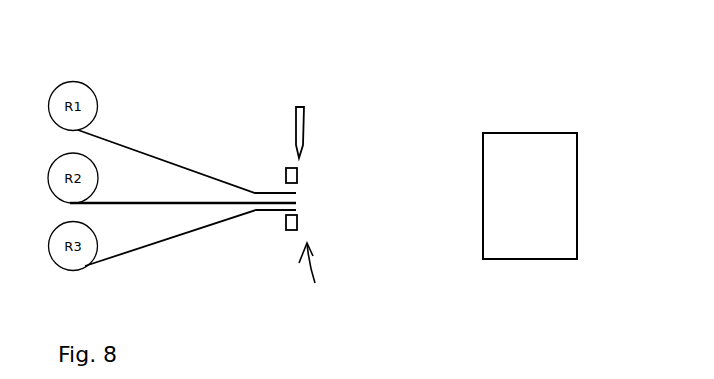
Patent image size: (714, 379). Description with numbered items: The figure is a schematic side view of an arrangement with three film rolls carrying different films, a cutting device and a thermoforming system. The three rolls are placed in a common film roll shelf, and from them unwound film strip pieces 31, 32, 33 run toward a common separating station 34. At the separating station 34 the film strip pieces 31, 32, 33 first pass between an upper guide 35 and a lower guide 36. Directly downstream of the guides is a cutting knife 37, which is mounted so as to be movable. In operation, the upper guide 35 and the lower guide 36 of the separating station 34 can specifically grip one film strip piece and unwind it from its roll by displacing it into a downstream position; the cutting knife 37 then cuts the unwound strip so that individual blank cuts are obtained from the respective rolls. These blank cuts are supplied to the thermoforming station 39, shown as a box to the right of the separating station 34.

The unwound film strip piece 31 is at (165, 160).
The unwound film strip piece 32 is at (180, 203).
The unwound film strip piece 33 is at (162, 242).
The separating station 34 is at (324, 273).
The upper guide 35 is at (288, 167).
The lower guide 36 is at (297, 220).
The cutting knife 37 is at (304, 122).
The thermoforming station 39 is at (545, 217).